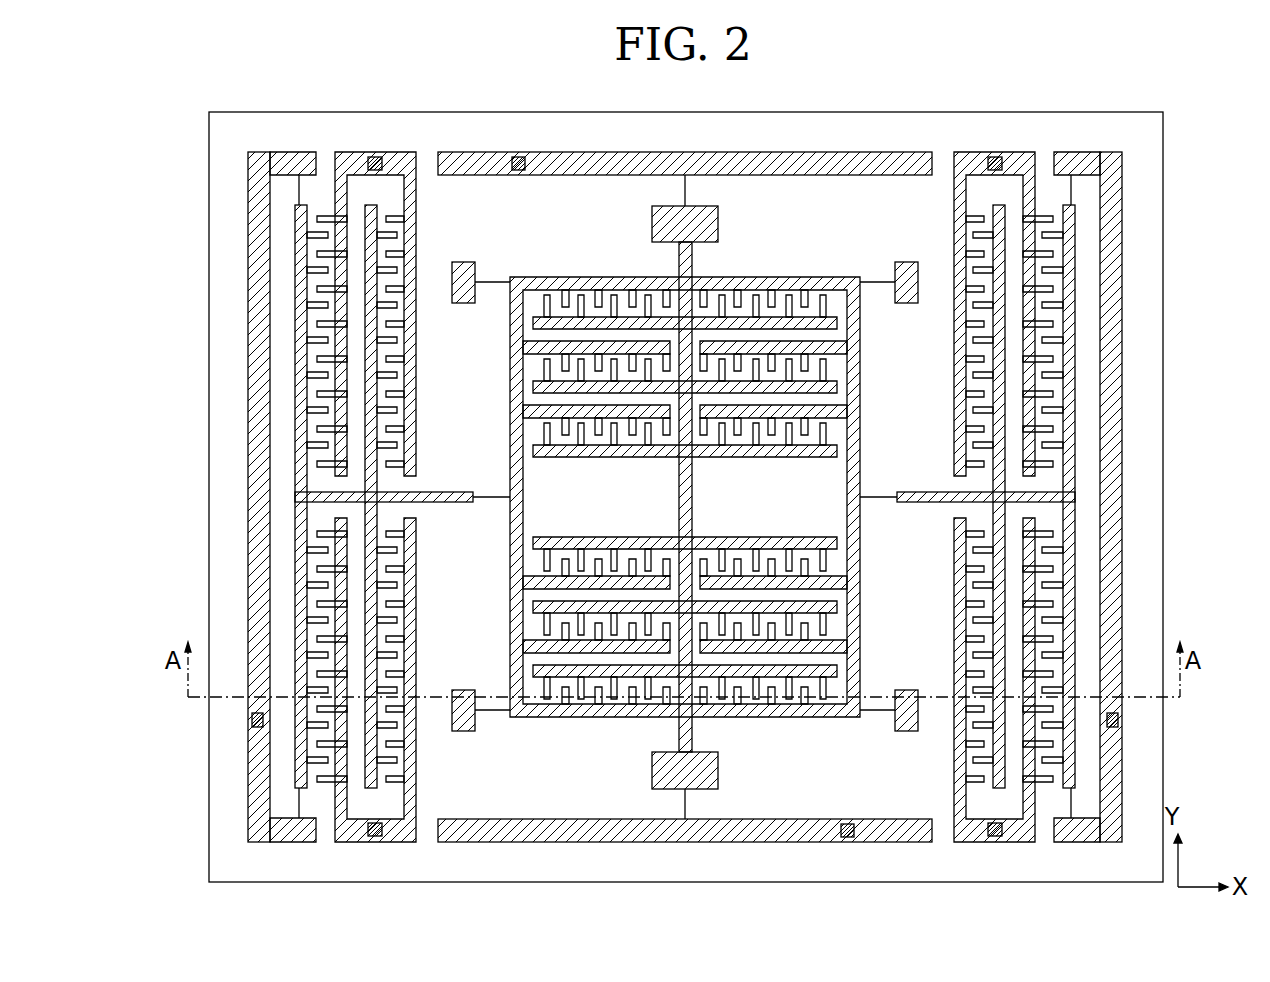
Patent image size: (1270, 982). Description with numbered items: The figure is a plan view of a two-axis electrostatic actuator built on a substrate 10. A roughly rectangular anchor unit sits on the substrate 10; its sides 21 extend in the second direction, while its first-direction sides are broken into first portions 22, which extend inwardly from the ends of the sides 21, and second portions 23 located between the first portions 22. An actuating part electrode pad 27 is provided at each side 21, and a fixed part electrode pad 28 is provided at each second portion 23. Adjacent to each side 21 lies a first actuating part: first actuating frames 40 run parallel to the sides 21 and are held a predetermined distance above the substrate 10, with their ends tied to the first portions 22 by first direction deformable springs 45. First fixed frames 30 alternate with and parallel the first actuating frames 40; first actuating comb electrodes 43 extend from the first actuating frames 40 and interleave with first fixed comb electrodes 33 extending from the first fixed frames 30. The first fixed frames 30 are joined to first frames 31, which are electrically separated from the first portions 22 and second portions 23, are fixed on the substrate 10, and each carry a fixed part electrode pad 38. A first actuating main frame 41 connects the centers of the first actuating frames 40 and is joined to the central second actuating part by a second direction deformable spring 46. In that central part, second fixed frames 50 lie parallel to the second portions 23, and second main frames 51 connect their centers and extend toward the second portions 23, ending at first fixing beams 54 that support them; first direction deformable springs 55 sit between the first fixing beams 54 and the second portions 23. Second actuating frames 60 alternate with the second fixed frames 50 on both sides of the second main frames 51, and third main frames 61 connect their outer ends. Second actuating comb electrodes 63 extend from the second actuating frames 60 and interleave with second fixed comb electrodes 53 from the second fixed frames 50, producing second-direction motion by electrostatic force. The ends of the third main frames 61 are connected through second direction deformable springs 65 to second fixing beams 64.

The substrate 10 is at (1163, 528).
The sides 21 is at (255, 610).
The first portions 22 is at (300, 152).
The second portions 23 is at (748, 152).
The actuating part electrode pad 27 is at (252, 720).
The fixed part electrode pad 28 is at (518, 157).
The first fixed frames 30 is at (410, 205).
The first frames 31 is at (408, 176).
The first fixed comb electrodes 33 is at (318, 322).
The fixed part electrode pad 38 is at (375, 157).
The first actuating frames 40 is at (296, 270).
The first actuating main frame 41 is at (298, 500).
The first actuating comb electrodes 43 is at (314, 306).
The first direction deformable springs 45 is at (299, 190).
The second direction deformable spring 46 is at (488, 504).
The second fixed frames 50 is at (775, 298).
The second main frames 51 is at (692, 258).
The second fixed comb electrodes 53 is at (826, 307).
The first fixing beams 54 is at (652, 226).
The first direction deformable springs 55 is at (685, 192).
The second actuating frames 60 is at (857, 392).
The third main frames 61 is at (862, 472).
The second actuating comb electrodes 63 is at (803, 440).
The second fixing beams 64 is at (902, 731).
The second direction deformable springs 65 is at (880, 712).